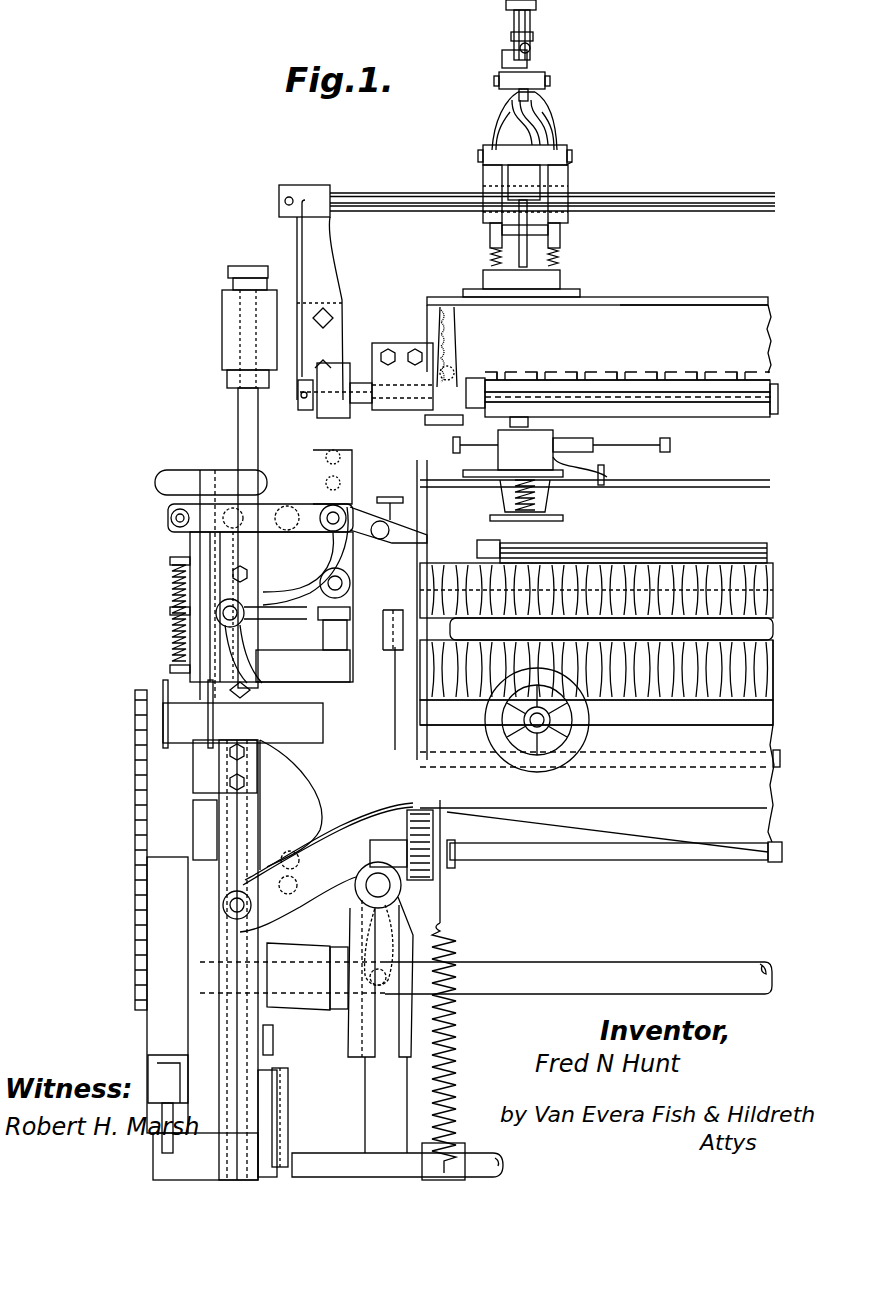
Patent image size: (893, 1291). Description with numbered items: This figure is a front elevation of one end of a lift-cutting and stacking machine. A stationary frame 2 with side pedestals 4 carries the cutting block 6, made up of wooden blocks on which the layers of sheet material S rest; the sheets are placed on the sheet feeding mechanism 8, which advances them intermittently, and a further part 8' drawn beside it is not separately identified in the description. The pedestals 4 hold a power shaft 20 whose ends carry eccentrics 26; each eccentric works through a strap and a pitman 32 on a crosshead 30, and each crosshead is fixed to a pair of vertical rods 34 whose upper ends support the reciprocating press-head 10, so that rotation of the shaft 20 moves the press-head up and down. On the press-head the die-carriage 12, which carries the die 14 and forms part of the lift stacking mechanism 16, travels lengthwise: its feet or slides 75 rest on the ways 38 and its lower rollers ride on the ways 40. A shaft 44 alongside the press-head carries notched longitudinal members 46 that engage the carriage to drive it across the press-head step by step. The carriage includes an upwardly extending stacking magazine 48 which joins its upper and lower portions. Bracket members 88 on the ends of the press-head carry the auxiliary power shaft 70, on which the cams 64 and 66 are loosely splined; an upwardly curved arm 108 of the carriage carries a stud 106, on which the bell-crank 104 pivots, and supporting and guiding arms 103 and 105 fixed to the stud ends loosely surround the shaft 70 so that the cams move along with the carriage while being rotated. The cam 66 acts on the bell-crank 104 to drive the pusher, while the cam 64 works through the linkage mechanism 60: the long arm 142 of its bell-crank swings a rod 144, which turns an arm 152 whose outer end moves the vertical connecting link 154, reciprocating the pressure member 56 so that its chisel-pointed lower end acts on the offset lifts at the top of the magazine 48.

The stationary frame 2 is at (665, 800).
The side pedestals 4 is at (225, 1034).
The cutting block 6 is at (720, 560).
The sheet feeding mechanism 8 is at (423, 986).
The bracket 8' is at (291, 605).
The reciprocating press-head 10 is at (715, 310).
The die-carriage 12 is at (553, 289).
The die 14 is at (545, 508).
The lift stacking mechanism 16 is at (505, 240).
The power shaft 20 is at (540, 975).
The eccentrics 26 is at (268, 935).
The crossheads 30 is at (283, 1100).
The pitmen 32 is at (205, 928).
The vertically projecting rods 34 is at (238, 423).
The ways 38 is at (645, 297).
The ways 40 is at (430, 420).
The shaft 44 is at (405, 412).
The notched longitudinal members 46 is at (680, 395).
The stacking magazine 48 is at (560, 437).
The pressure member 56 is at (527, 24).
The linkage mechanism 60 is at (531, 47).
The cam 64 is at (560, 176).
The cam 66 is at (497, 172).
The auxiliary power shaft 70 is at (735, 192).
The feet or slides 75 is at (572, 297).
The bracket members 88 is at (325, 262).
The supporting and guiding arm 103 is at (484, 214).
The bell-crank 104 is at (506, 112).
The supporting and guiding arm 105 is at (570, 165).
The stud 106 is at (572, 155).
The arm 108 is at (524, 170).
The long arm 142 is at (548, 121).
The rod 144 is at (530, 60).
The arm 152 is at (503, 62).
The connecting link 154 is at (515, 24).
The sheet material S is at (630, 545).